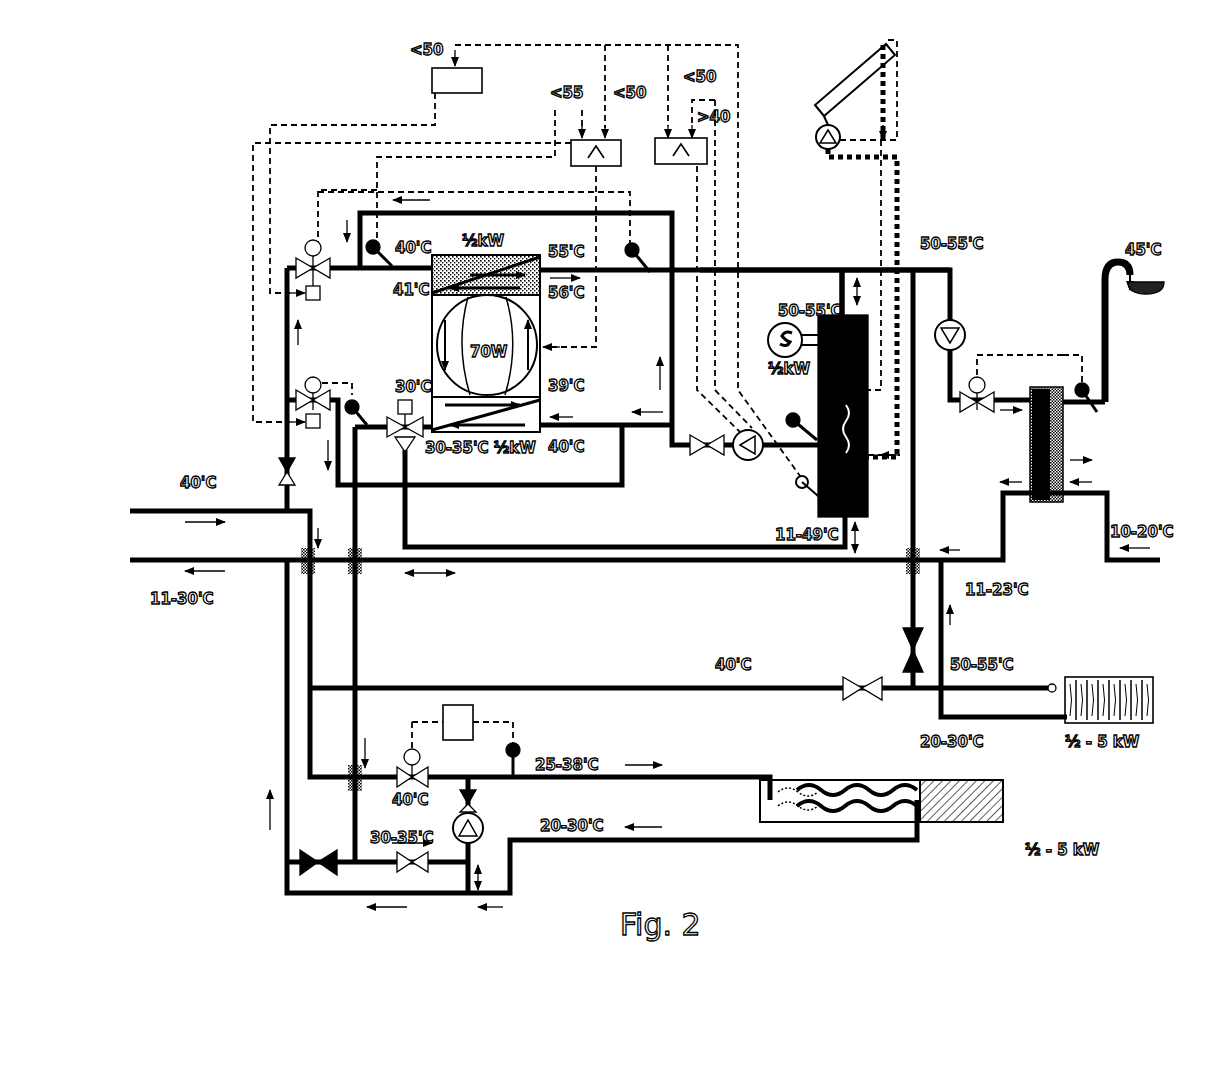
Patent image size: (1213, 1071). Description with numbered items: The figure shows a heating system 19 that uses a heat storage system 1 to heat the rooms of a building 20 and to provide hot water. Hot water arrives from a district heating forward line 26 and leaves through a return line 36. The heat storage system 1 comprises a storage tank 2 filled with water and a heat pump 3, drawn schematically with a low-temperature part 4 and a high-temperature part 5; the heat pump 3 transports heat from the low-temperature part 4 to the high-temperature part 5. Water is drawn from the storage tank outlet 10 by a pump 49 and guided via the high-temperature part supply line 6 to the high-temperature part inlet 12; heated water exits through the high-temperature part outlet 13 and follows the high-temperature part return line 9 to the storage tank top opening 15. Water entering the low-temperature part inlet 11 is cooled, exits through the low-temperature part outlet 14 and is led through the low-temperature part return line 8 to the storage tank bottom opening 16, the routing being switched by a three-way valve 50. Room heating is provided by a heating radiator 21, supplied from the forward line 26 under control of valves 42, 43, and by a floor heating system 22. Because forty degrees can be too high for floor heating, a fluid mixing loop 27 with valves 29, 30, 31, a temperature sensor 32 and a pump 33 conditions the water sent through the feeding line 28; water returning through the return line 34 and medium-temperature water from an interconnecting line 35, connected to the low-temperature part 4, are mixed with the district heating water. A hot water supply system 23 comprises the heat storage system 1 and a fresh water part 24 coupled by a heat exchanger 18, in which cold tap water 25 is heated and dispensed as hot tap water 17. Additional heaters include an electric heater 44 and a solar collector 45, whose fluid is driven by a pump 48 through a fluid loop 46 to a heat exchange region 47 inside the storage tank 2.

The heat storage system 1 is at (913, 488).
The storage tank 2 is at (866, 505).
The heat pump 3 is at (462, 349).
The low-temperature part 4 is at (520, 432).
The high-temperature part 5 is at (475, 262).
The high-temperature part supply line 6 is at (645, 214).
The low-temperature part return line 8 is at (660, 548).
The high-temperature part return line 9 is at (778, 268).
The storage tank outlet 10 is at (818, 450).
The low-temperature part inlet 11 is at (545, 418).
The high-temperature part inlet 12 is at (540, 267).
The high-temperature part outlet 13 is at (430, 268).
The low-temperature part outlet 14 is at (404, 407).
The storage tank top opening 15 is at (842, 312).
The storage tank bottom opening 16 is at (852, 530).
The hot tap water 17 is at (1100, 238).
The heat exchanger 18 is at (1070, 435).
The heating system 19 is at (190, 170).
The building 20 is at (1108, 205).
The heating radiator 21 is at (1153, 700).
The floor heating system 22 is at (1027, 800).
The hot water supply system 23 is at (1055, 510).
The fresh water part 24 is at (1100, 453).
The cold tap water 25 is at (1132, 562).
The forward line 26 is at (265, 510).
The fluid mixing loop 27 is at (490, 750).
The feeding line 28 is at (690, 775).
The valve 29 is at (405, 752).
The valve 30 is at (320, 855).
The valve 31 is at (405, 868).
The temperature sensor 32 is at (520, 750).
The pump 33 is at (483, 826).
The return line 34 is at (720, 840).
The interconnecting line 35 is at (357, 628).
The return line 36 is at (952, 305).
The valve 42 is at (860, 696).
The valve 43 is at (900, 640).
The electric heater 44 is at (768, 338).
The solar collector 45 is at (832, 92).
The fluid loop 46 is at (897, 192).
The heat exchange region 47 is at (900, 455).
The pump 48 is at (815, 142).
The pump 49 is at (748, 460).
The three-way valve 50 is at (400, 438).